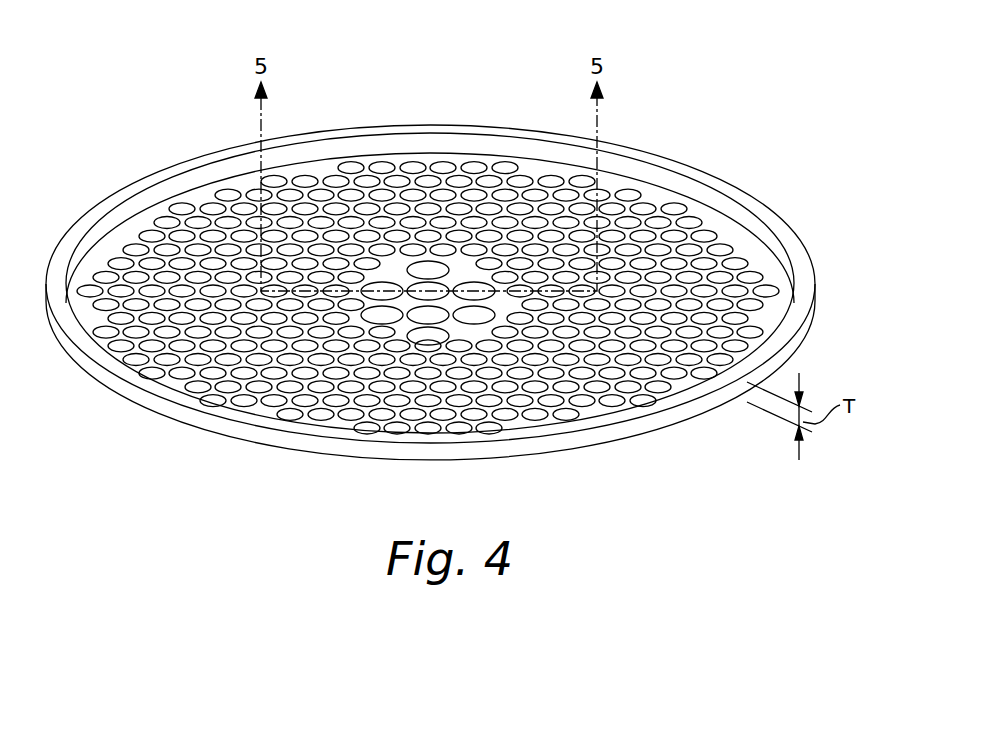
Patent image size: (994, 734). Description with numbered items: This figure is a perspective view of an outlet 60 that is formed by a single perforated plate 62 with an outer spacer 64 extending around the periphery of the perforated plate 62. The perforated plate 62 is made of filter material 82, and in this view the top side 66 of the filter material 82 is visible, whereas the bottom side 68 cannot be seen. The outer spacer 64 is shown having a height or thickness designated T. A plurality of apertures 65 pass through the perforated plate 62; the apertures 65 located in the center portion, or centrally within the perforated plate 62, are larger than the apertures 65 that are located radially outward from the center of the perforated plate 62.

The outlet 60 is at (430, 253).
The perforated plate 62 is at (713, 223).
The outer spacer 64 is at (203, 157).
The apertures 65 is at (370, 212).
The top side 66 is at (125, 230).
The bottom side 68 is at (172, 418).
The filter material 82 is at (388, 338).